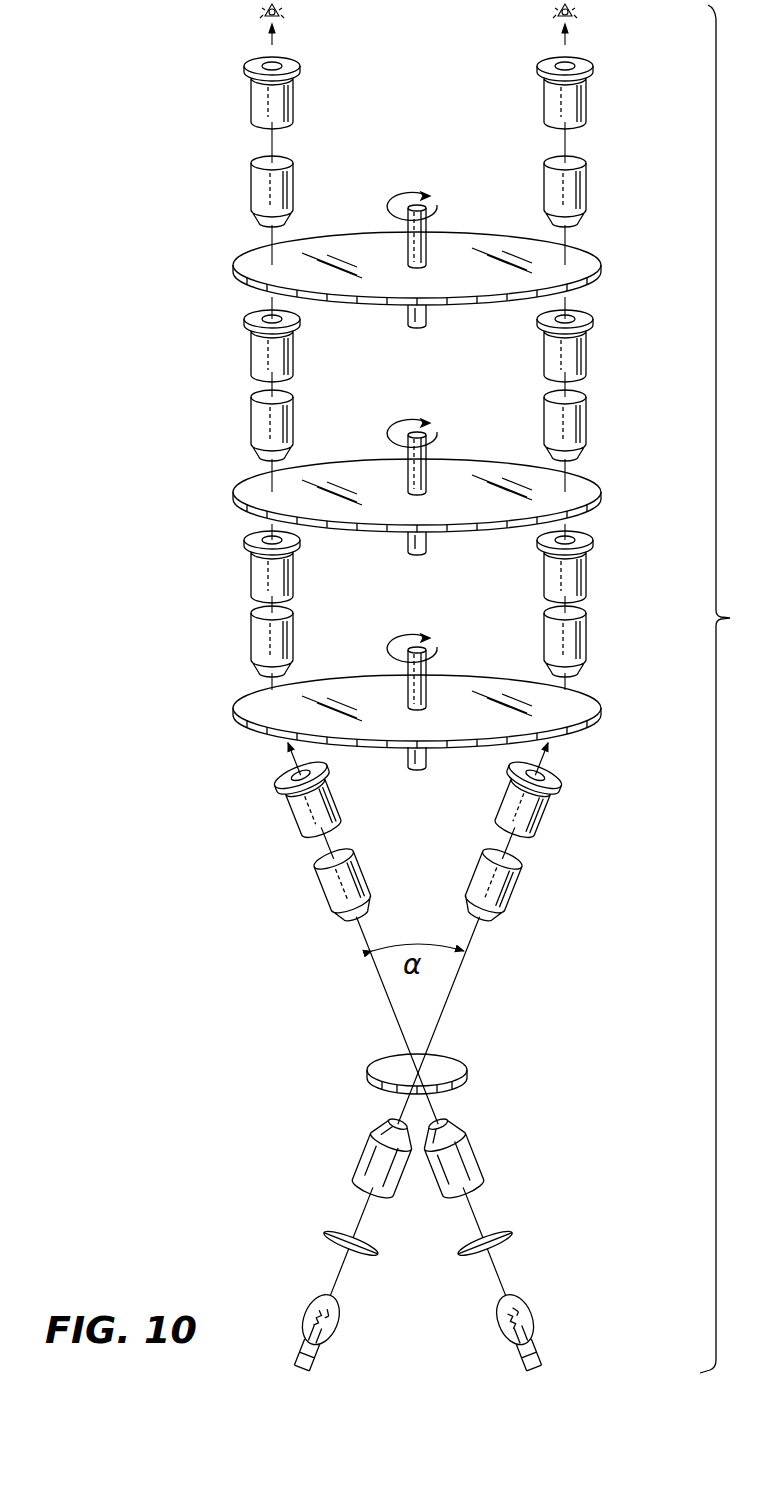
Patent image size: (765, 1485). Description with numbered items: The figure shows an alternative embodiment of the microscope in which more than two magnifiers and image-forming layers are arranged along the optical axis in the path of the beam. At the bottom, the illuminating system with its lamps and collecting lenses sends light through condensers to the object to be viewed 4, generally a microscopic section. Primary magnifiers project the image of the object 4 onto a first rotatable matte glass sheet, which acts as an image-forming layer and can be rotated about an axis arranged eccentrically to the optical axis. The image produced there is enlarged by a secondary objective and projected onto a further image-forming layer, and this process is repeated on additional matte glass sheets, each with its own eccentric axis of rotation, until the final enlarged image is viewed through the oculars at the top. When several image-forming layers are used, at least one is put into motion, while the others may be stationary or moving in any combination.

The object to be viewed 4 is at (460, 1073).